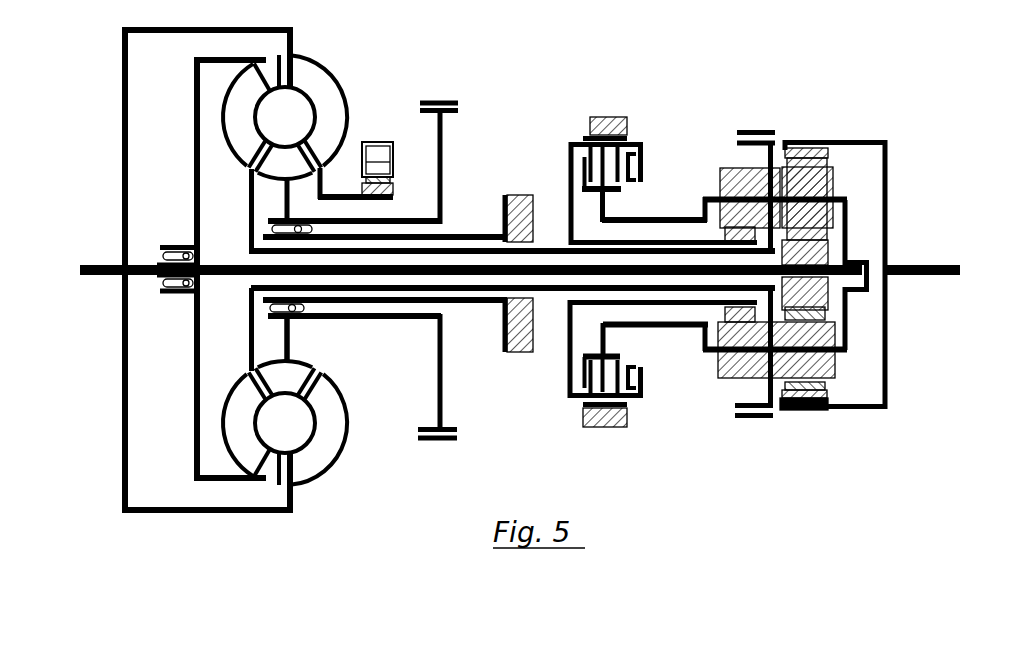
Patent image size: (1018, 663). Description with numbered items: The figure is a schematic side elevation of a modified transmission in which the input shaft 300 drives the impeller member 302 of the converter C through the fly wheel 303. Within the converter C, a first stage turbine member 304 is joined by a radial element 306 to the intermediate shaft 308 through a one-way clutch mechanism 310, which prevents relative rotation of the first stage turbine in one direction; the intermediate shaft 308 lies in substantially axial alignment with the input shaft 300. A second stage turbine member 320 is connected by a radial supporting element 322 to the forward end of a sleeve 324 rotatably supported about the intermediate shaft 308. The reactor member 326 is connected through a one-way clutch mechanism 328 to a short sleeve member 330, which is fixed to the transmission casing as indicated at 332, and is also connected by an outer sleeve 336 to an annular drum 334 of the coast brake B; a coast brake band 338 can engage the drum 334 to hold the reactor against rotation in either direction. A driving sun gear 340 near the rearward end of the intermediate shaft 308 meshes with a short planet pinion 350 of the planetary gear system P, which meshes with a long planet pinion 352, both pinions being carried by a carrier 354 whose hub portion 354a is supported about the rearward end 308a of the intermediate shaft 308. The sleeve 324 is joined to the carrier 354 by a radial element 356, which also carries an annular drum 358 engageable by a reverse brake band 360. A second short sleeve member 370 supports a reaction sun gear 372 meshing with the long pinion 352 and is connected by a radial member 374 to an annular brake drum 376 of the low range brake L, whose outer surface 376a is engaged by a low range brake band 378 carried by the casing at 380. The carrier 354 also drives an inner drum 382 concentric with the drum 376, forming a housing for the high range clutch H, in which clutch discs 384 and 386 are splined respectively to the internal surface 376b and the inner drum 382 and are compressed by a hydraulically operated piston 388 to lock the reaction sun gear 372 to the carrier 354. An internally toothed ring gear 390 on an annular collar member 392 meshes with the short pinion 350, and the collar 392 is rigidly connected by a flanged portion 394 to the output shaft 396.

The input shaft 300 is at (108, 277).
The impeller member 302 is at (316, 68).
The fly wheel 303 is at (125, 165).
The first stage turbine member 304 is at (277, 70).
The radial element 306 is at (197, 152).
The intermediate shaft 308 is at (215, 277).
The rearward end of the intermediate shaft 308a is at (848, 248).
The one-way clutch mechanism 310 is at (160, 253).
The second stage turbine member 320 is at (249, 172).
The radial supporting element 322 is at (249, 223).
The sleeve 324 is at (258, 255).
The reactor member 326 is at (271, 178).
The one-way clutch mechanism 328 is at (314, 212).
The short sleeve member 330 is at (448, 236).
The transmission casing connection 332 is at (523, 194).
The annular drum 334 is at (463, 82).
The outer sleeve 336 is at (395, 218).
The coast brake band 338 is at (420, 101).
The driving sun gear 340 is at (833, 303).
The short planet pinion 350 is at (832, 158).
The long planet pinion 352 is at (717, 172).
The carrier 354 is at (848, 212).
The hub portion 354a is at (870, 262).
The radial element 356 is at (730, 243).
The annular drum 358 is at (738, 135).
The reverse brake band 360 is at (775, 130).
The second short sleeve member 370 is at (627, 241).
The reaction sun gear 372 is at (700, 218).
The radial member 374 is at (568, 170).
The annular brake drum 376 is at (582, 145).
The outer surface of the drum 376a is at (633, 143).
The internal surface of the drum 376b is at (583, 148).
The low range brake band 378 is at (609, 262).
The transmission casing mounting 380 is at (598, 114).
The inner drum 382 is at (613, 205).
The clutch discs 384 is at (637, 183).
The clutch discs 386 is at (568, 160).
The hydraulically operated piston 388 is at (645, 160).
The internally toothed ring gear 390 is at (785, 140).
The annular collar member 392 is at (885, 142).
The flanged portion 394 is at (888, 155).
The output shaft 396 is at (945, 270).
The converter C is at (232, 118).
The coast brake B is at (410, 103).
The high range clutch H is at (578, 180).
The low range brake L is at (590, 124).
The planetary gear system P is at (855, 395).